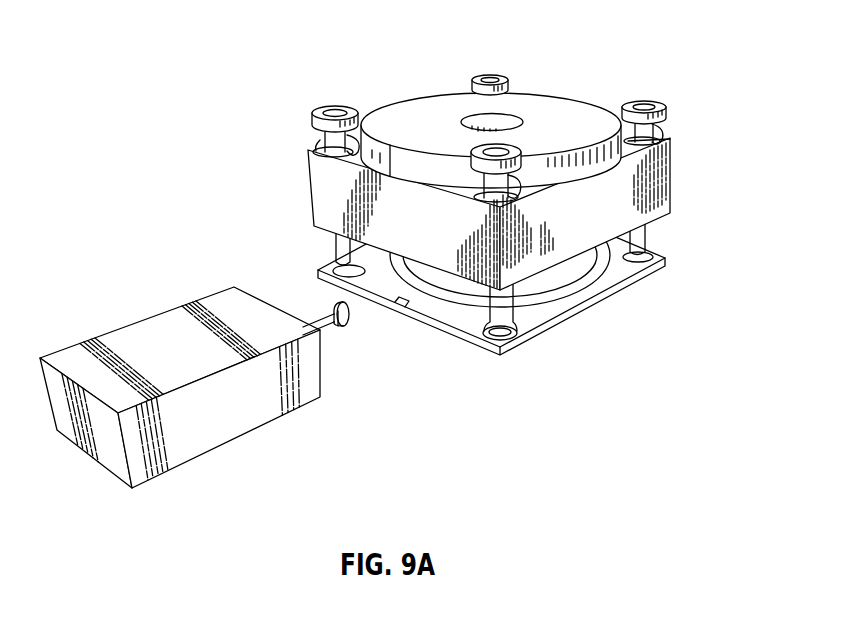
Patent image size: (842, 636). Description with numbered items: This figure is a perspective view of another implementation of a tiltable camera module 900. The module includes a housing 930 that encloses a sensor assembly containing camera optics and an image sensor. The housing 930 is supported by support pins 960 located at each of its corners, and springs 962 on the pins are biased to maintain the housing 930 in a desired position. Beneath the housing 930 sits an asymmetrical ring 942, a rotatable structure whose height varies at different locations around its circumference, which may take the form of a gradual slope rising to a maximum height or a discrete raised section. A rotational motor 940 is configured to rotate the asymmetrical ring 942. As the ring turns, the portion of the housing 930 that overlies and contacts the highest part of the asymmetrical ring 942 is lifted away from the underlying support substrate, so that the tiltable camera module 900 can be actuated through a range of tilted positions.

The tiltable camera module 900 is at (623, 40).
The housing 930 is at (657, 160).
The rotational motor 940 is at (77, 423).
The asymmetrical ring 942 is at (553, 303).
The support pins 960 is at (316, 122).
The springs 962 is at (316, 146).